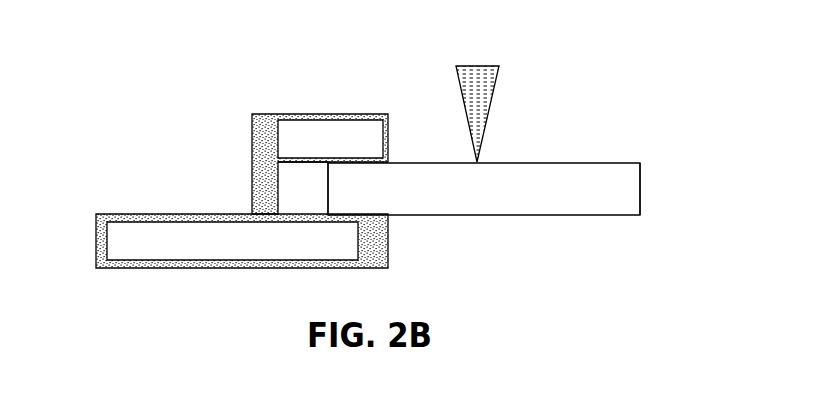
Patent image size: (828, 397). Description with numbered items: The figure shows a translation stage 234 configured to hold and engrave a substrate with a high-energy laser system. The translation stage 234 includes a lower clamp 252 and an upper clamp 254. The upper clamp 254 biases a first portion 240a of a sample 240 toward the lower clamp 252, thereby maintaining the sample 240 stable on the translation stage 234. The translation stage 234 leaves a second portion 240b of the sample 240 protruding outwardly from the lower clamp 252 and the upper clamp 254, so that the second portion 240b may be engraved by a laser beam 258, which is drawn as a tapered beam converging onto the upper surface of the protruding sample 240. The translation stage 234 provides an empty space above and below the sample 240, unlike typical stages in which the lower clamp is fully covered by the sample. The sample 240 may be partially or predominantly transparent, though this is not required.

The translation stage 234 is at (215, 104).
The lower clamp 252 is at (390, 233).
The upper clamp 254 is at (317, 114).
The sample 240 is at (583, 162).
The first portion of sample 240a is at (372, 197).
The second portion of sample 240b is at (496, 196).
The laser beam 258 is at (493, 99).